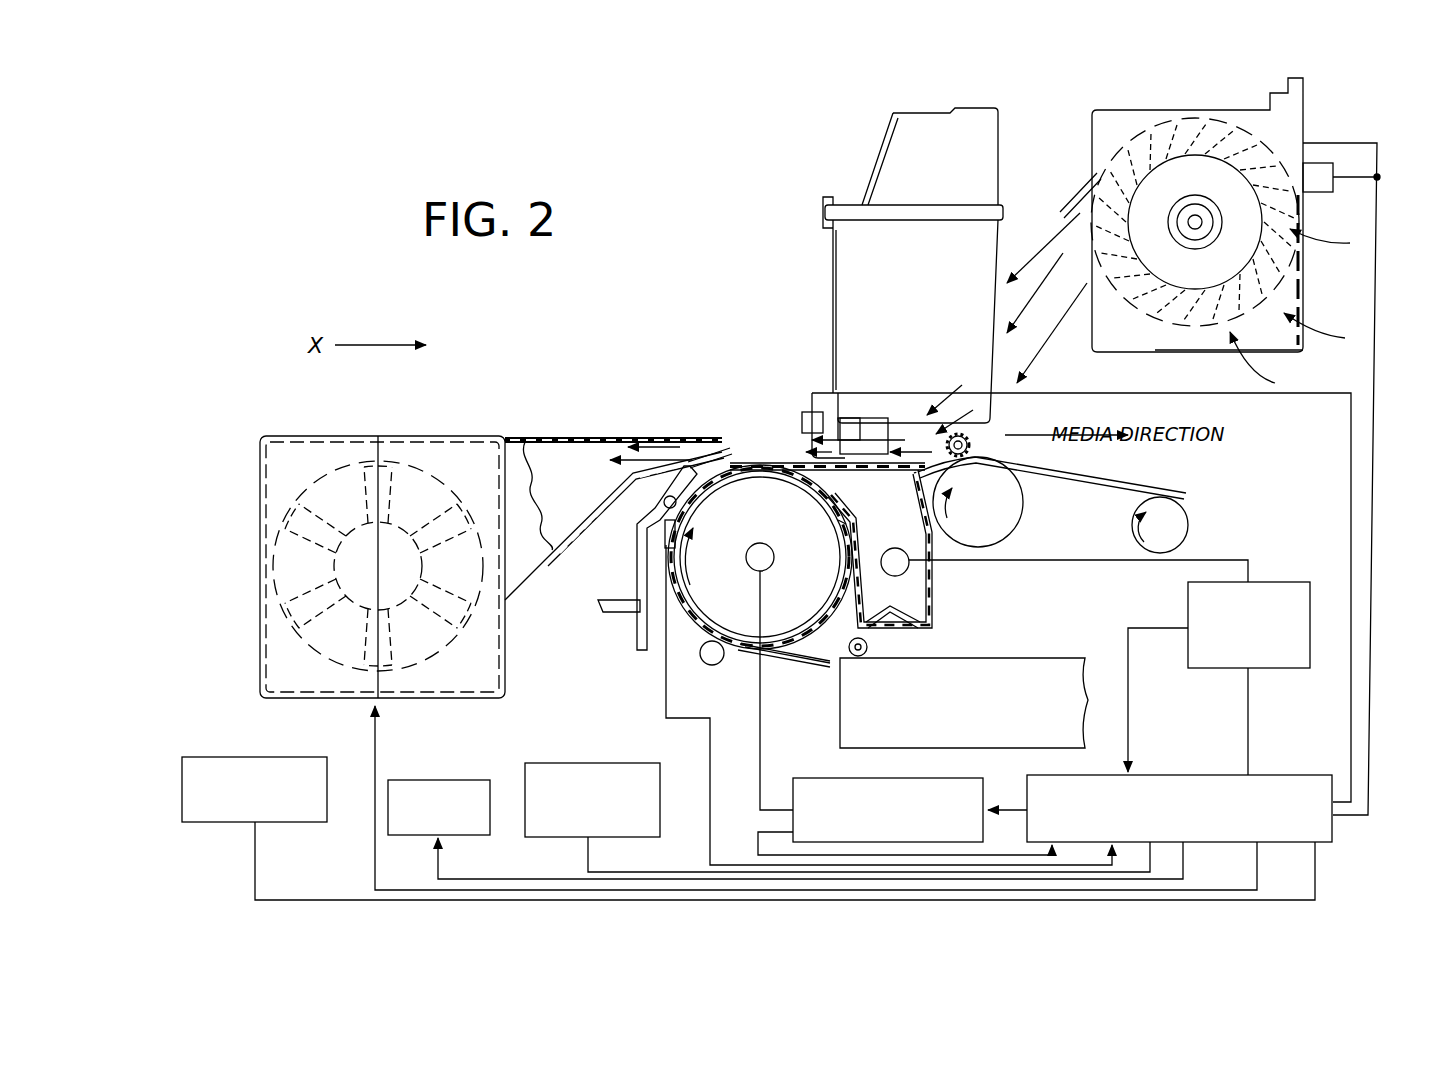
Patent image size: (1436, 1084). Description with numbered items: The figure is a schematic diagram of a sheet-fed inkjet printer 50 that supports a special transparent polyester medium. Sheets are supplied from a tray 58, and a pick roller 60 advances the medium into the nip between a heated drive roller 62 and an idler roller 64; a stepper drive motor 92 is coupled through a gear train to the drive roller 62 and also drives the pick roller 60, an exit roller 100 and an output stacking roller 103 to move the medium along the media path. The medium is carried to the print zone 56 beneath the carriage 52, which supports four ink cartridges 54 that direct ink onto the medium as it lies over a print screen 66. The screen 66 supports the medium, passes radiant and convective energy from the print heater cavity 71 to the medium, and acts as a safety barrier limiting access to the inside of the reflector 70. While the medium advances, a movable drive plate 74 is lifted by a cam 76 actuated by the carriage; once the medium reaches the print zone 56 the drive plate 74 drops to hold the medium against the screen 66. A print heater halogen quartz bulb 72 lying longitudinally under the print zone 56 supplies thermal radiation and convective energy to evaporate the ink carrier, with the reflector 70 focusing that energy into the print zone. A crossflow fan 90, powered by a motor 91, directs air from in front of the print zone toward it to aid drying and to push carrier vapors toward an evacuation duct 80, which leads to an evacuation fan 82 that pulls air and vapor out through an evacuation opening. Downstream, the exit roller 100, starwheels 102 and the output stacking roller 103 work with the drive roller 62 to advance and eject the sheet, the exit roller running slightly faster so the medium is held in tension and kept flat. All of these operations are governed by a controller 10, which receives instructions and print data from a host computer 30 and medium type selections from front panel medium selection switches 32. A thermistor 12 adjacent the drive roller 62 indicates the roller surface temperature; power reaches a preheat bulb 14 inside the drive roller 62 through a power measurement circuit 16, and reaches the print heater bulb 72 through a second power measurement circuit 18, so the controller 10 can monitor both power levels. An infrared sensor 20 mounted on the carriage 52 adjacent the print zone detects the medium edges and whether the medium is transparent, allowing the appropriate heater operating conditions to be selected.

The controller 10 is at (1162, 775).
The thermistor 12 is at (664, 545).
The preheat bulb 14 is at (766, 566).
The power measurement circuit 16 is at (816, 778).
The power measurement circuit 18 is at (1295, 584).
The infrared sensor 20 is at (812, 412).
The host computer 30 is at (232, 757).
The medium selection switches 32 is at (572, 763).
The inkjet printer 50 is at (612, 394).
The carriage 52 is at (850, 160).
The ink cartridges 54 is at (833, 278).
The print zone 56 is at (806, 458).
The tray 58 is at (1007, 658).
The pick roller 60 is at (868, 645).
The drive roller 62 is at (703, 628).
The idler roller 64 is at (720, 665).
The print screen 66 is at (856, 478).
The reflector 70 is at (940, 578).
The print heater cavity 71 is at (902, 532).
The print heater halogen quartz bulb 72 is at (891, 572).
The movable drive plate 74 is at (770, 445).
The cam 76 is at (605, 598).
The evacuation duct 80 is at (566, 436).
The evacuation fan 82 is at (290, 568).
The crossflow fan 90 is at (1122, 110).
The motor 91 is at (1330, 192).
The stepper drive motor 92 is at (438, 780).
The exit roller 100 is at (1023, 520).
The starwheels 102 is at (972, 446).
The output stacking roller 103 is at (1188, 521).